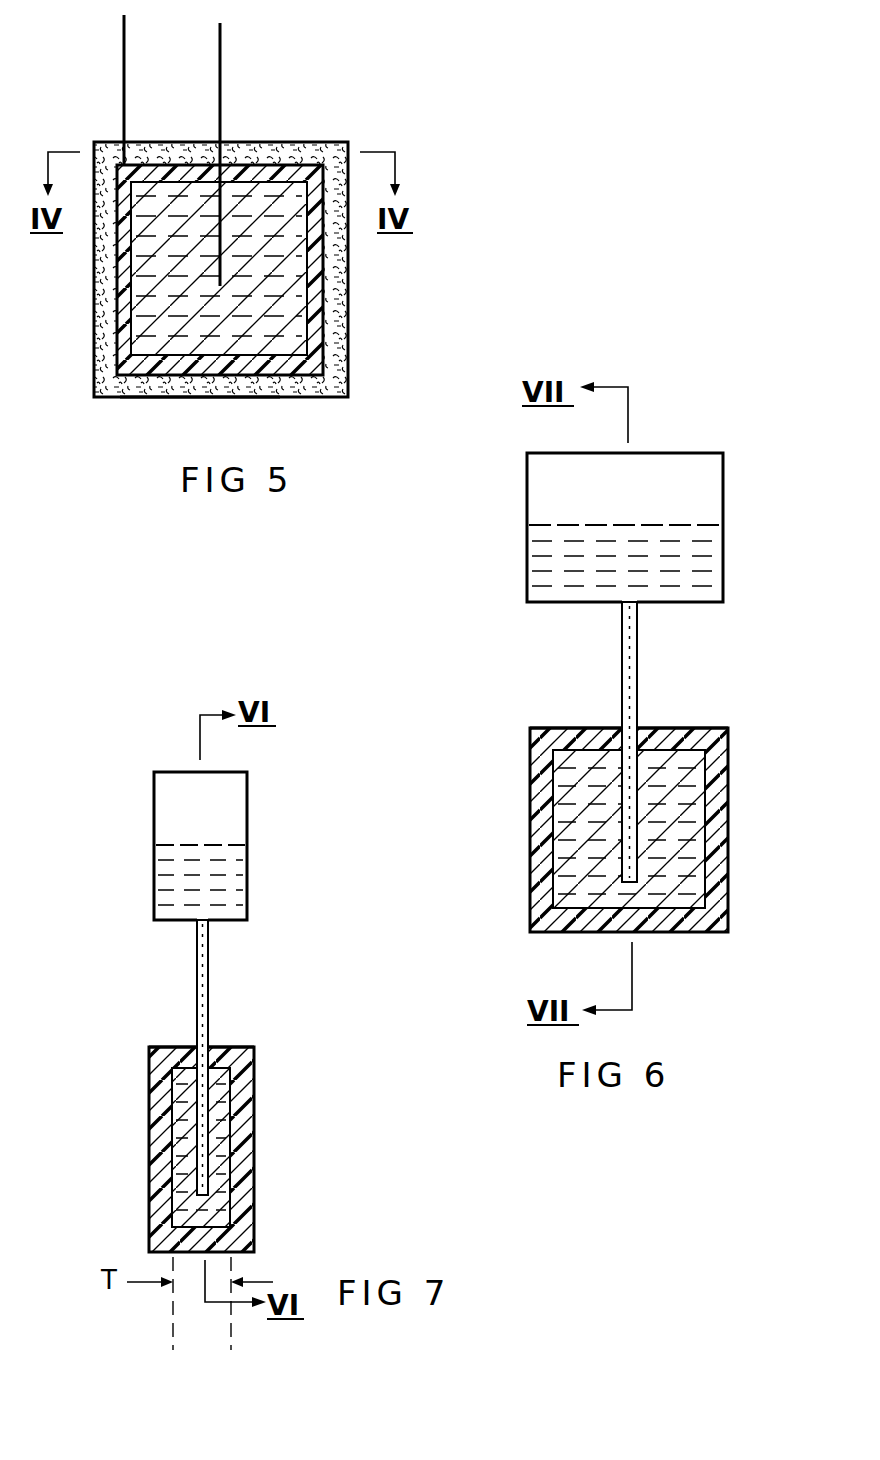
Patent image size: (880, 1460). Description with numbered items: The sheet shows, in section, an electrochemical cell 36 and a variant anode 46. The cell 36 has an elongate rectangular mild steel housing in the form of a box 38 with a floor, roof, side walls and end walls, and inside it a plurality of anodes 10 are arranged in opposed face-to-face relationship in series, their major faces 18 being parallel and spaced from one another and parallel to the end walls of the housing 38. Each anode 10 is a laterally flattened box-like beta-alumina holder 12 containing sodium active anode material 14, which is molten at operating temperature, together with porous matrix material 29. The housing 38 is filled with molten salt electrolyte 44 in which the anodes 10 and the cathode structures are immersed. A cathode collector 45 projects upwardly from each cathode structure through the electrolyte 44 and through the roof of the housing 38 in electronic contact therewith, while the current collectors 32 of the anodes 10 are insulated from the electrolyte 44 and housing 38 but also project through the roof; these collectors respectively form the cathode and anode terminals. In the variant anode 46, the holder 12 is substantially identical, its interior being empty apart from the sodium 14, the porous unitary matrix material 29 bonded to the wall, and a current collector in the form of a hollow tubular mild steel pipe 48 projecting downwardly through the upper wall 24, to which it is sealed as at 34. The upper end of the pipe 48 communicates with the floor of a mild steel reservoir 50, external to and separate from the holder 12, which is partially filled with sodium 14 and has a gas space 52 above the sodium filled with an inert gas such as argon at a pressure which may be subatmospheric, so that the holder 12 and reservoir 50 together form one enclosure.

In FIG. 5, the anode 10 is at (270, 142).
In FIG. 5, the holder 12 is at (172, 144).
In FIG. 6, the holder 12 is at (500, 766).
In FIG. 7, the holder 12 is at (284, 1064).
In FIG. 5, the sodium active anode material 14 is at (291, 268).
In FIG. 6, the sodium active anode material 14 is at (553, 551).
In FIG. 7, the sodium active anode material 14 is at (222, 883).
In FIG. 7, the major faces 18 is at (243, 1160).
In FIG. 6, the upper wall 24 is at (590, 740).
In FIG. 7, the upper wall 24 is at (243, 1058).
In FIG. 5, the porous matrix material 29 is at (290, 302).
In FIG. 6, the porous matrix material 29 is at (575, 822).
In FIG. 7, the porous matrix material 29 is at (215, 1218).
In FIG. 5, the current collector 32 is at (220, 87).
In FIG. 6, the seal 34 is at (675, 739).
In FIG. 7, the seal 34 is at (165, 1062).
In FIG. 5, the electrochemical cell 36 is at (340, 50).
In FIG. 5, the housing 38 is at (313, 142).
In FIG. 5, the electrolyte 44 is at (197, 398).
In FIG. 5, the cathode collector 45 is at (124, 67).
In FIG. 6, the anode 46 is at (500, 502).
In FIG. 7, the anode 46 is at (244, 965).
In FIG. 6, the pipe 48 is at (636, 810).
In FIG. 7, the pipe 48 is at (208, 1123).
In FIG. 6, the reservoir 50 is at (723, 508).
In FIG. 7, the reservoir 50 is at (154, 803).
In FIG. 6, the gas space 52 is at (656, 476).
In FIG. 7, the gas space 52 is at (225, 802).